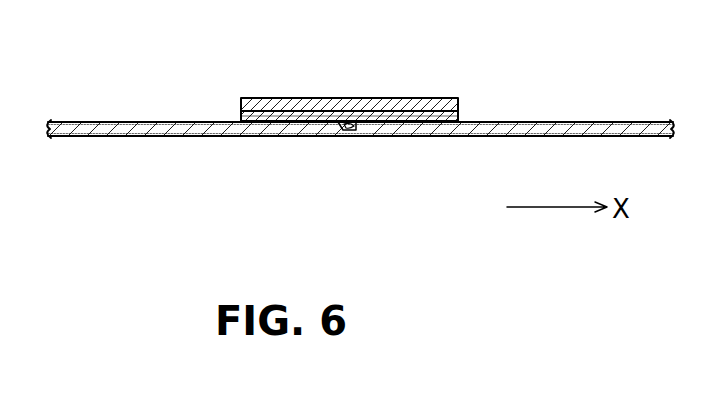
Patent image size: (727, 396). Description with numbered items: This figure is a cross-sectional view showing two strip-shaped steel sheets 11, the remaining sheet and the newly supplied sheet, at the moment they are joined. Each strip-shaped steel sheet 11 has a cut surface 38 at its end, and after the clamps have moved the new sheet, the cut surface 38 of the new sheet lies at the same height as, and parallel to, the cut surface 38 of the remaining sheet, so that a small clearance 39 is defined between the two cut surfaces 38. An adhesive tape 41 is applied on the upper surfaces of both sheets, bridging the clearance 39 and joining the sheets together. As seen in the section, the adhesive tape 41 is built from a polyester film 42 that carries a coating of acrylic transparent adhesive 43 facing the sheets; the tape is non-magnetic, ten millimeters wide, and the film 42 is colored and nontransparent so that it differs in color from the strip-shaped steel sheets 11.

The strip-shaped steel sheet 11 is at (168, 137).
The cut surface 38 is at (341, 122).
The clearance 39 is at (345, 132).
The adhesive tape 41 is at (400, 83).
The polyester film 42 is at (458, 103).
The acrylic transparent adhesive 43 is at (458, 115).